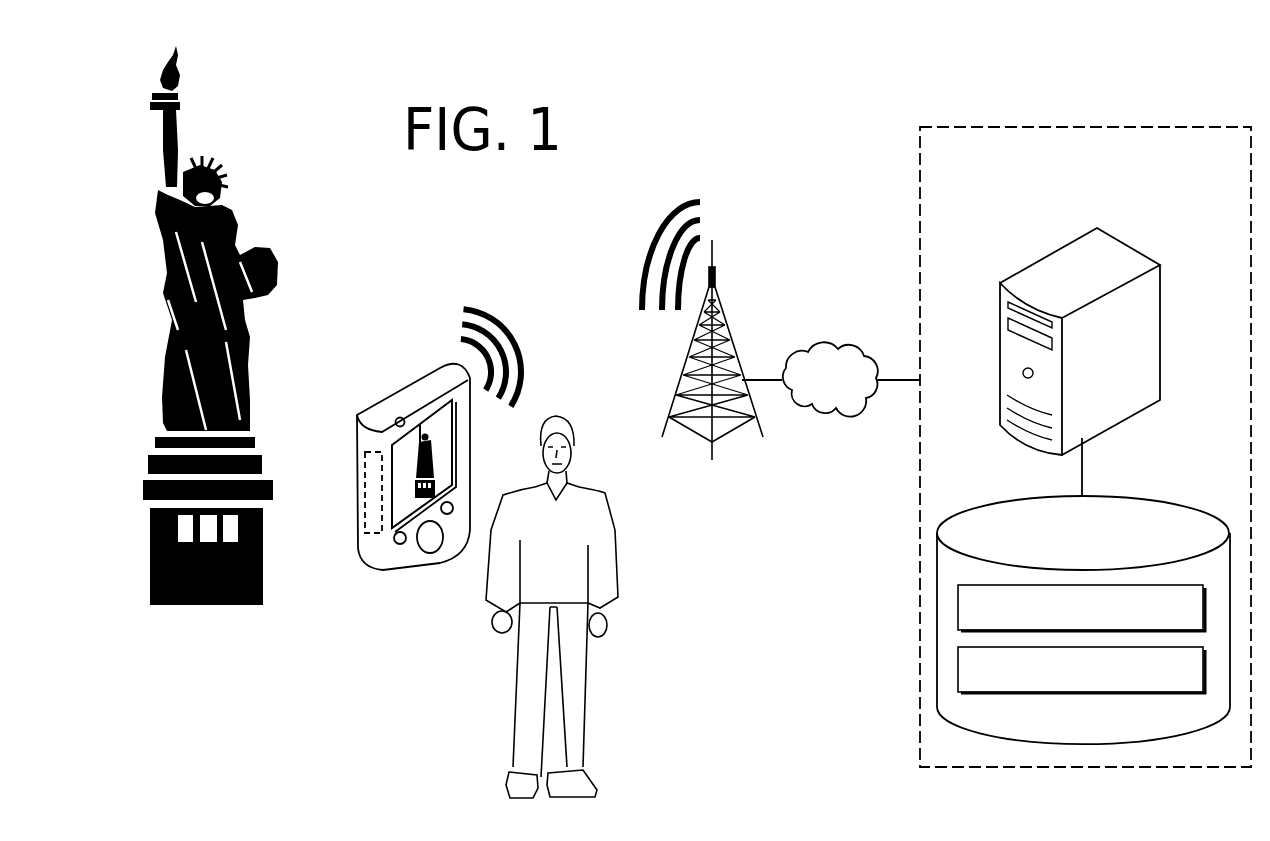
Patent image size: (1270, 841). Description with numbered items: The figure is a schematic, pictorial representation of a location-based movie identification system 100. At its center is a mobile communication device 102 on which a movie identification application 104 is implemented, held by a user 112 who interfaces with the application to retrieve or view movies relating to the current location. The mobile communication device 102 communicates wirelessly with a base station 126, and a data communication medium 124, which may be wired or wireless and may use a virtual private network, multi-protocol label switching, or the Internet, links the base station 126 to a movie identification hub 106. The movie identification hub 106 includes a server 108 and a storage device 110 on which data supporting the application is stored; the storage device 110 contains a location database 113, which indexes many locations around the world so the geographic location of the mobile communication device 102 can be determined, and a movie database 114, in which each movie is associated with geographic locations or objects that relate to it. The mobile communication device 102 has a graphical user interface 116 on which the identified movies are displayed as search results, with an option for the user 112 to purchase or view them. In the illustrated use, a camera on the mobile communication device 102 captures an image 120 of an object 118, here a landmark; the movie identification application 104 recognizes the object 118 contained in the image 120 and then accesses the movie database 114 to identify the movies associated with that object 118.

The location-based movie identification system 100 is at (756, 156).
The mobile communication device 102 is at (450, 366).
The movie identification application 104 is at (365, 533).
The movie identification hub 106 is at (920, 158).
The server 108 is at (1133, 413).
The storage device 110 is at (937, 535).
The user 112 is at (610, 607).
The location database 113 is at (958, 605).
The movie database 114 is at (958, 667).
The graphical user interface 116 is at (357, 430).
The object 118 is at (235, 605).
The image 120 is at (437, 450).
The data communication medium 124 is at (847, 390).
The base station 126 is at (725, 313).